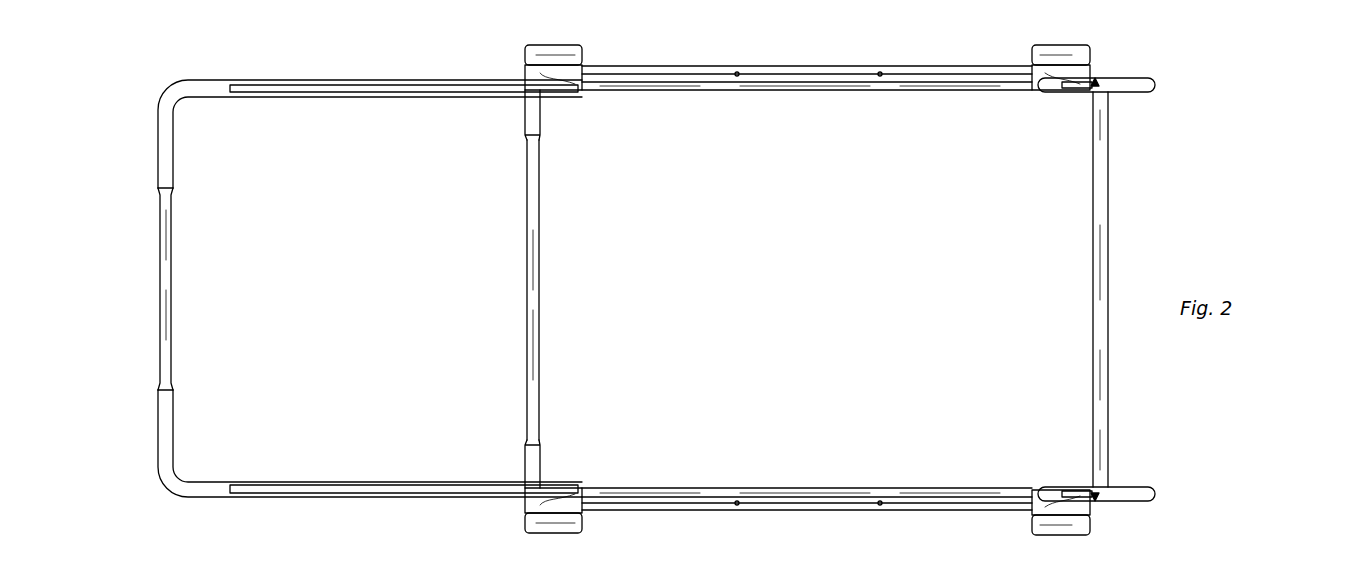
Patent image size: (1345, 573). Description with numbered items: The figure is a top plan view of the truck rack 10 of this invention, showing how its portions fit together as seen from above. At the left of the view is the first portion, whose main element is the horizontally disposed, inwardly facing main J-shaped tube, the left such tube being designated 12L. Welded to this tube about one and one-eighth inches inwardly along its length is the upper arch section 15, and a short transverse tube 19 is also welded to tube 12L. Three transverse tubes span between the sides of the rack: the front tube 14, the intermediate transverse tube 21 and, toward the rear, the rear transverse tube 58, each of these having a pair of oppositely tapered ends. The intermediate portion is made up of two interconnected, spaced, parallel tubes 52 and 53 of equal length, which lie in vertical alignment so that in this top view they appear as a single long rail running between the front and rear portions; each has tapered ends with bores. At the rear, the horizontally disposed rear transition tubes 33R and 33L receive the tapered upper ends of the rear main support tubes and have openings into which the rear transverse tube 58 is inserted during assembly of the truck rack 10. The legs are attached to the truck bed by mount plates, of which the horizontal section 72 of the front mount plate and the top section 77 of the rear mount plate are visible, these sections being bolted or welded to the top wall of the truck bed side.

The truck rack 10 is at (1140, 392).
The left main J-shaped tube 12L is at (345, 482).
The front tube 14 is at (175, 300).
The upper arch section 15 is at (412, 503).
The short transverse tube 19 is at (527, 117).
The intermediate transverse tube 21 is at (540, 297).
The right rear transition tube 33R is at (1055, 80).
The left rear transition tube 33L is at (1055, 492).
The intermediate portion tube 52 is at (797, 90).
The intermediate portion tube 53 is at (832, 66).
The rear transverse tube 58 is at (1108, 243).
The horizontal section of front mount plate 72 is at (585, 52).
The top section of rear mount plate 77 is at (1050, 50).